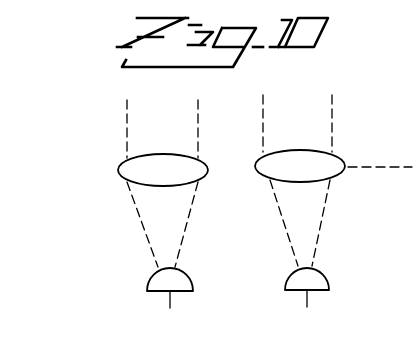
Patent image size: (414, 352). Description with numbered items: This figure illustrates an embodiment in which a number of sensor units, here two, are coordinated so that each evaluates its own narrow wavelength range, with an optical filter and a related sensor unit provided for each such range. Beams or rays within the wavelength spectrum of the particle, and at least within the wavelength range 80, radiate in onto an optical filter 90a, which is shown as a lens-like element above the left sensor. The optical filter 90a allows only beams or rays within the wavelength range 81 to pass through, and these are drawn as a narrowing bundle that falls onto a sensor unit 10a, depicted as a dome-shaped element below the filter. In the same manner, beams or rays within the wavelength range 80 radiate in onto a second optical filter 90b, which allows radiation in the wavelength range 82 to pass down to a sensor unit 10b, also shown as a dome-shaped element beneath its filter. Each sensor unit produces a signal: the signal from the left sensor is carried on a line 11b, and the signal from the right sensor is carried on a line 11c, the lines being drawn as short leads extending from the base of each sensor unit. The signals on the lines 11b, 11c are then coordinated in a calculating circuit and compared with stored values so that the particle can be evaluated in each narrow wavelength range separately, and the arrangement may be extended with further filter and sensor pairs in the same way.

The wavelength range 80 is at (168, 123).
The optical filter 90a is at (126, 169).
The optical filter 90b is at (337, 167).
The wavelength range 81 is at (149, 233).
The wavelength range 82 is at (283, 211).
The sensor unit 10a is at (181, 277).
The sensor unit 10b is at (320, 277).
The line 11b is at (170, 306).
The line 11c is at (307, 306).